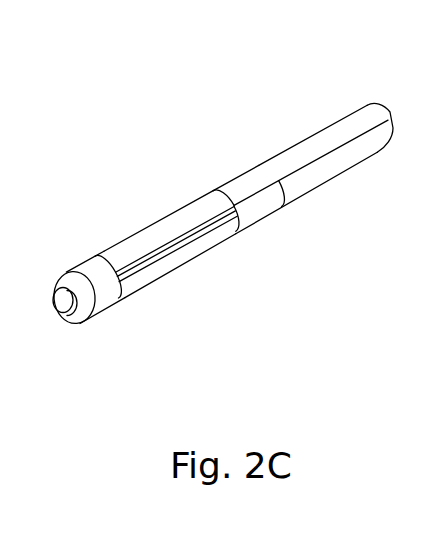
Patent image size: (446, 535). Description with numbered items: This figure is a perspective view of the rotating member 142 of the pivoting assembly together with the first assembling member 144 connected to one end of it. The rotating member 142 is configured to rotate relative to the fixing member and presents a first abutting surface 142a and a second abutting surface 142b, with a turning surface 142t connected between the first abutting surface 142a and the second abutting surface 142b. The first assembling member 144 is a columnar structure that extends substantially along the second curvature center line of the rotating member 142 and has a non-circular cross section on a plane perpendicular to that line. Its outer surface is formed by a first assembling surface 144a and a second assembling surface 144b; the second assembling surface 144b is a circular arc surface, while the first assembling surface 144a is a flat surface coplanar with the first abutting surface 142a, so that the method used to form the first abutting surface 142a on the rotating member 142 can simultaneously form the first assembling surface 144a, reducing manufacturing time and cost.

The rotating member 142 is at (102, 251).
The first abutting surface 142a is at (198, 248).
The second abutting surface 142b is at (157, 240).
The turning surface 142t is at (148, 262).
The first assembling member 144 is at (288, 162).
The first assembling surface 144a is at (300, 188).
The second assembling surface 144b is at (358, 120).